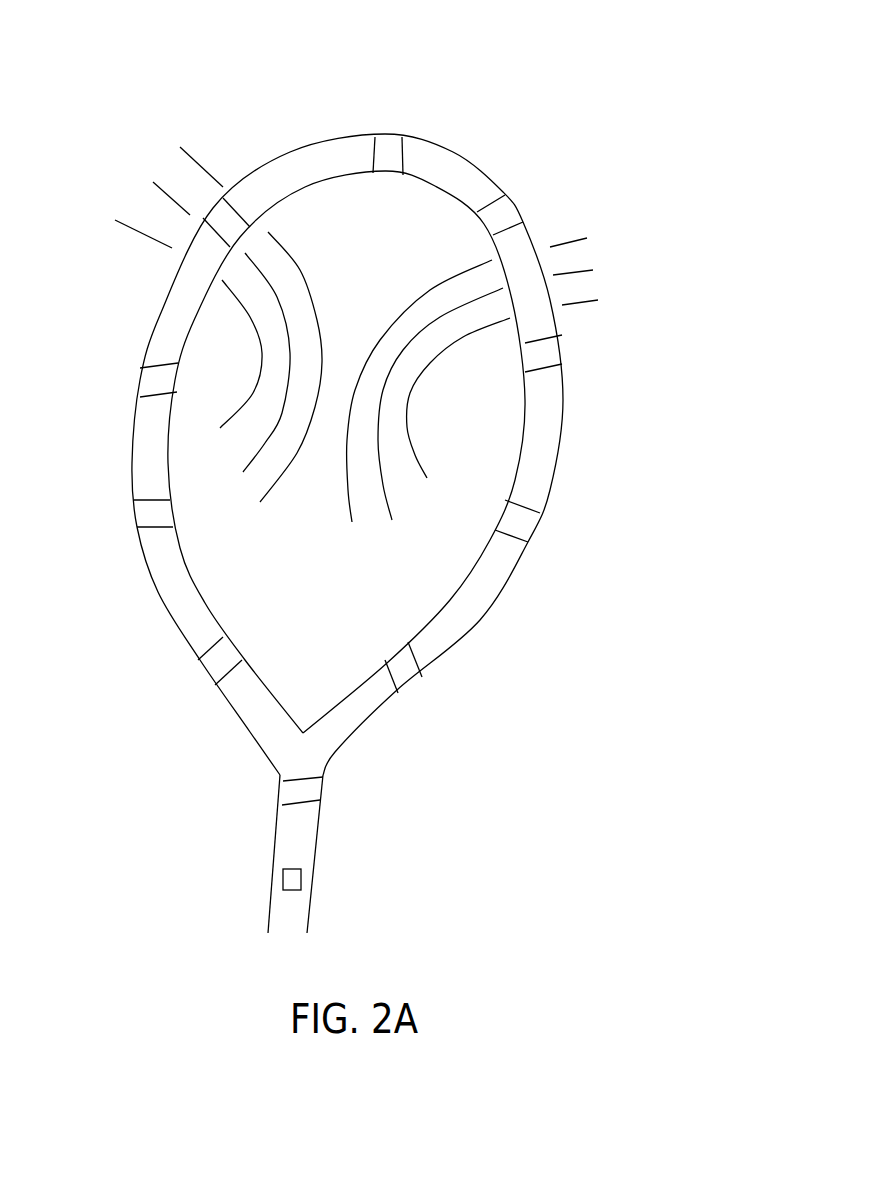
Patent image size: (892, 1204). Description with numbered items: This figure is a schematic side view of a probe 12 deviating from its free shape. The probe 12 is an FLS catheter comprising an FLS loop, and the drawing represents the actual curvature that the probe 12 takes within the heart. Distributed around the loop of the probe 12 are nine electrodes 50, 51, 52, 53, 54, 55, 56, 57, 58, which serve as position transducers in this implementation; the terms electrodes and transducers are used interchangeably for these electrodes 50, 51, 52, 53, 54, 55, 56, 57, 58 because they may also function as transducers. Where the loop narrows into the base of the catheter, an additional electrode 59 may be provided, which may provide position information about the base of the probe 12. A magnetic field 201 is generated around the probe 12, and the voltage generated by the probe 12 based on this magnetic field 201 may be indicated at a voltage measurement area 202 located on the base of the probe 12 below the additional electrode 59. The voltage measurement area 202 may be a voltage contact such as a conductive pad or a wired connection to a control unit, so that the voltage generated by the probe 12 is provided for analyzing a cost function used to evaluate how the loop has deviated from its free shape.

The probe 12 is at (598, 88).
The electrode 50 is at (203, 677).
The electrode 51 is at (136, 520).
The electrode 52 is at (140, 380).
The electrode 53 is at (213, 208).
The electrode 54 is at (392, 134).
The electrode 55 is at (516, 202).
The electrode 56 is at (564, 350).
The electrode 57 is at (536, 527).
The electrode 58 is at (410, 688).
The additional electrode 59 is at (324, 787).
The magnetic field 201 is at (278, 483).
The voltage measurement area 202 is at (302, 880).